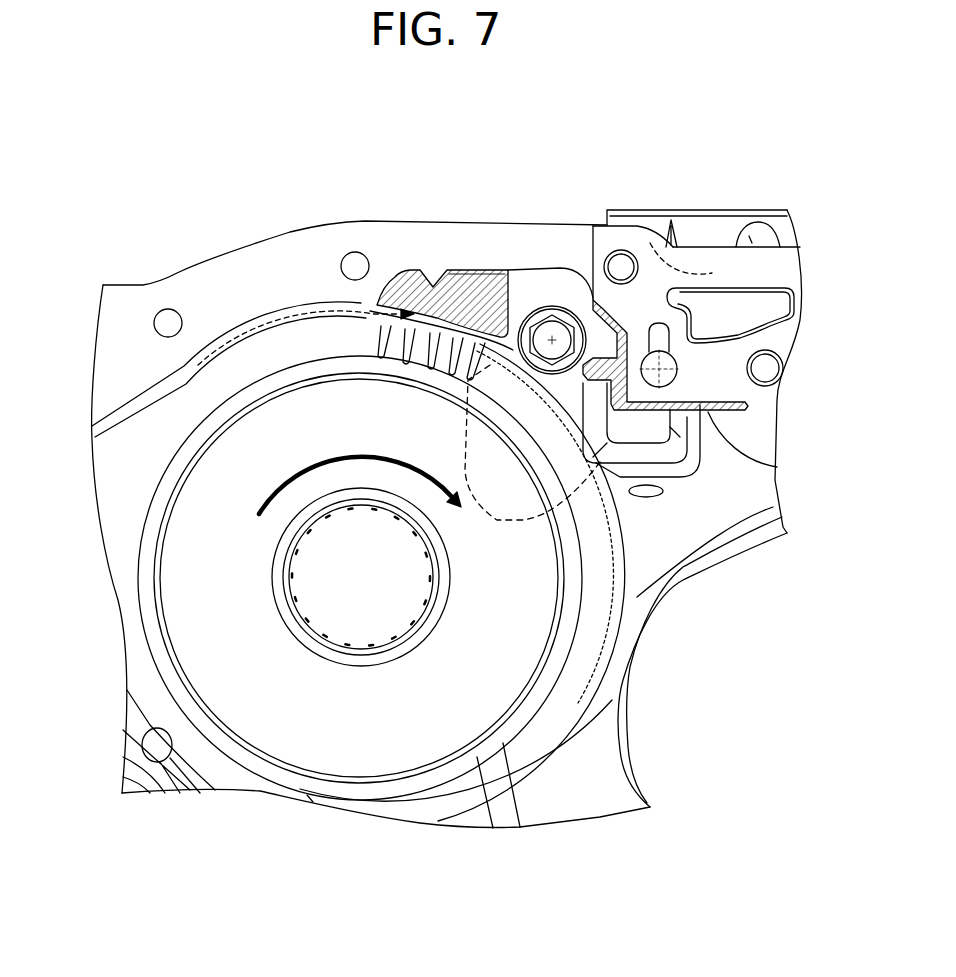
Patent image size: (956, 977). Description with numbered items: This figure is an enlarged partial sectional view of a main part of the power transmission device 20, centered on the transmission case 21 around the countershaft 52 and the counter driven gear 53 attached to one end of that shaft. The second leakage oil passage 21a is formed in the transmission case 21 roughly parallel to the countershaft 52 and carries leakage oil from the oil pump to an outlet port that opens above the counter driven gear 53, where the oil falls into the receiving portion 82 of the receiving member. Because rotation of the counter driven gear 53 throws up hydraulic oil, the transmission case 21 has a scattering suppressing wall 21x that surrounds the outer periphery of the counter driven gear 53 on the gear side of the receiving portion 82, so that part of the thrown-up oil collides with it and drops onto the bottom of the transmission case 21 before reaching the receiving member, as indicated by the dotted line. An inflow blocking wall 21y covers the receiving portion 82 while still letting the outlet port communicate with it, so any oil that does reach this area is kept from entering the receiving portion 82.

The power transmission device 20 is at (176, 271).
The transmission case 21 is at (297, 250).
The second leakage oil passage 21a is at (668, 328).
The scattering suppressing wall 21x is at (463, 297).
The inflow blocking wall 21y is at (613, 347).
The countershaft 52 is at (280, 581).
The counter driven gear 53 is at (392, 338).
The receiving portion 82 is at (670, 445).